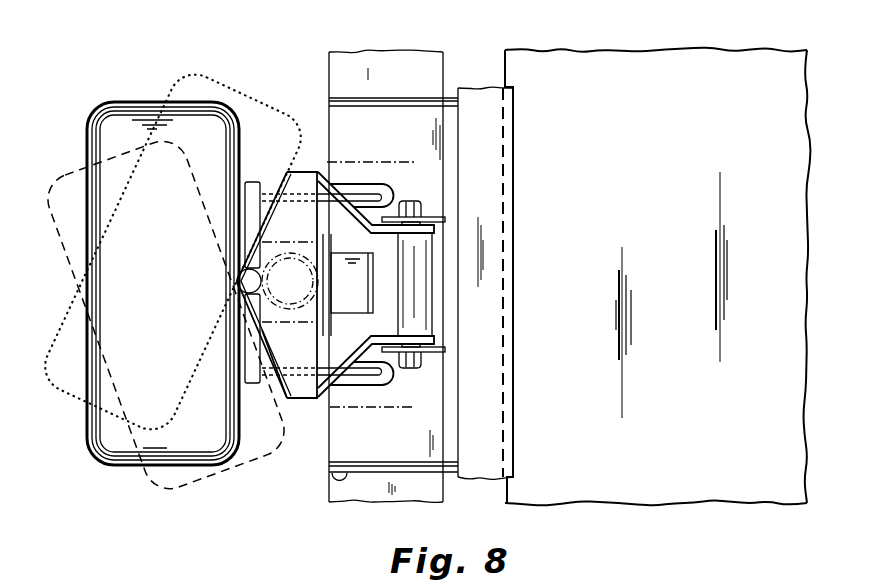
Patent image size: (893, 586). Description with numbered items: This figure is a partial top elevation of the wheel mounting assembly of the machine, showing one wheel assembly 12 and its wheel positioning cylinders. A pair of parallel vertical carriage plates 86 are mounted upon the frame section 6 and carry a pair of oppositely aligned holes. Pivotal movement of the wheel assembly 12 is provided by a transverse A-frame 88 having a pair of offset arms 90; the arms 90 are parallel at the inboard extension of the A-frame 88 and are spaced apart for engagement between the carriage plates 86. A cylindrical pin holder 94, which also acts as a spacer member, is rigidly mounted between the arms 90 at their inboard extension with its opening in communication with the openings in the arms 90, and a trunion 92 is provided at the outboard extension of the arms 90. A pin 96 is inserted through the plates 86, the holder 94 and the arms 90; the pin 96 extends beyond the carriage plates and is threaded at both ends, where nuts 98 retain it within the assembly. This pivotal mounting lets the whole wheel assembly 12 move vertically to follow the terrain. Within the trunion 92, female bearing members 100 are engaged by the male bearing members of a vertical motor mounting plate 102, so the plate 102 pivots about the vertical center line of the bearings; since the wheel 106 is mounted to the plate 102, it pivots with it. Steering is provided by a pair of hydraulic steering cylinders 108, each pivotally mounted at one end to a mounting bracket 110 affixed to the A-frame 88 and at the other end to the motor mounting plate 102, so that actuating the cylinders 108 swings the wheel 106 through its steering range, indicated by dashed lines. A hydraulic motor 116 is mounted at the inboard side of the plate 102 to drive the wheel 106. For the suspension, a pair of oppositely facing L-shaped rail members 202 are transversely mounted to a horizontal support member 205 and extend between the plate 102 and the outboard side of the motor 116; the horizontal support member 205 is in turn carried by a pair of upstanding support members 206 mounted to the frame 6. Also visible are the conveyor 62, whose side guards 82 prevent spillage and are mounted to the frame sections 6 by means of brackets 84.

The wheel assembly 12 is at (128, 468).
The wheel 106 is at (180, 277).
The frame section 6 is at (394, 52).
The bracket 84 is at (336, 98).
The side guard 82 is at (486, 88).
The conveyor 62 is at (700, 52).
The motor mounting plate 102 is at (250, 182).
The horizontal support member 205 is at (258, 355).
The female bearing member 100 is at (258, 283).
The L-shaped rail member 202 is at (278, 285).
The offset arm 90 is at (326, 172).
The trunion 92 is at (283, 393).
The transverse A-frame 88 is at (342, 207).
The mounting bracket 110 is at (347, 183).
The hydraulic steering cylinder 108 is at (358, 190).
The upstanding support member 206 is at (377, 163).
The hydraulic motor 116 is at (362, 238).
The cylindrical pin holder 94 is at (398, 320).
The carriage plate 86 is at (436, 218).
The pin 96 is at (410, 203).
The nut 98 is at (428, 203).